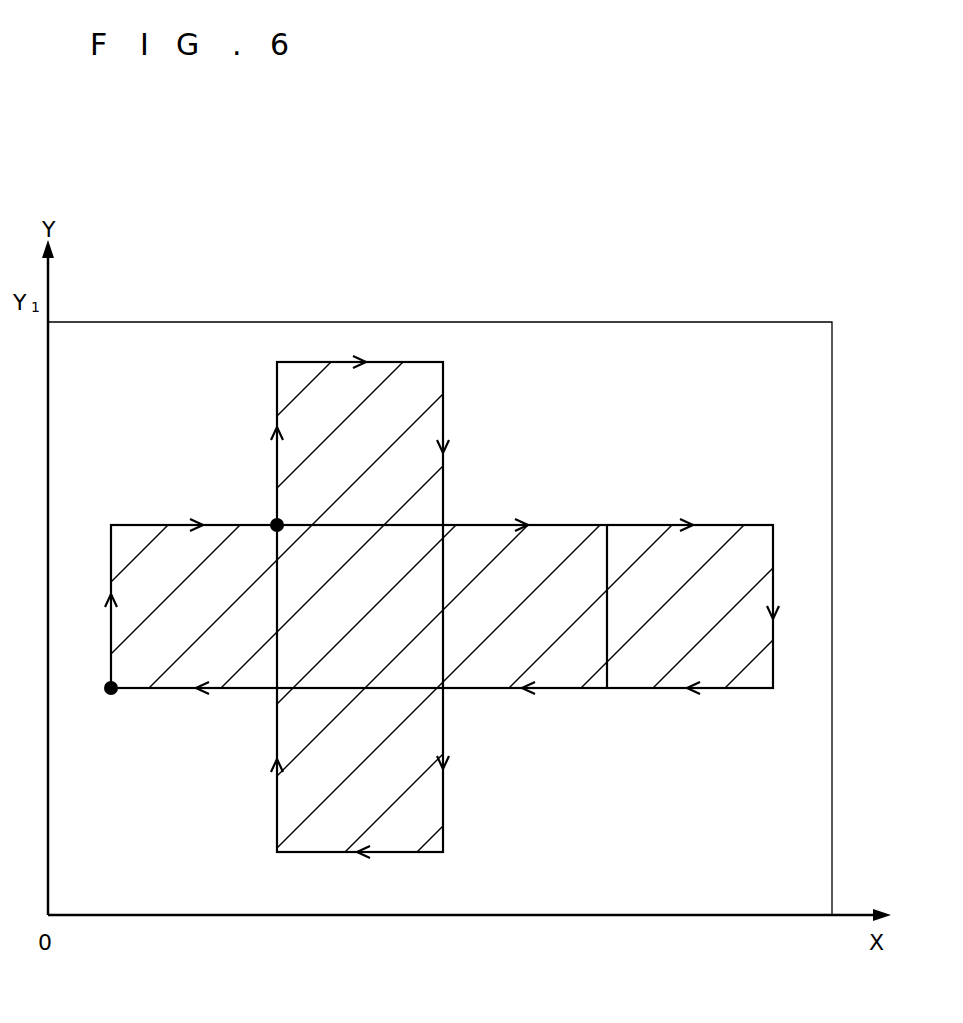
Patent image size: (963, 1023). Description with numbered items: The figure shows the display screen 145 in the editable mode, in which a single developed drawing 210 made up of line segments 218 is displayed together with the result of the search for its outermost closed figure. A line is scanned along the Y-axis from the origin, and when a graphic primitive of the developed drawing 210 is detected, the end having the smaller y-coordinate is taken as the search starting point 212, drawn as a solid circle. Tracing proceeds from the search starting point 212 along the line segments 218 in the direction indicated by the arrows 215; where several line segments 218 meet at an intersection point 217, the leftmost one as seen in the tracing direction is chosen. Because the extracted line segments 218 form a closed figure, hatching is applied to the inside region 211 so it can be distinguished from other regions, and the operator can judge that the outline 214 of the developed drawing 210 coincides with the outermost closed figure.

The display screen 145 is at (440, 322).
The developed drawing 210 is at (773, 518).
The inside region 211 is at (722, 609).
The search starting point 212 is at (110, 696).
The outline 214 is at (443, 832).
The arrows 215 is at (110, 592).
The intersection point 217 is at (272, 522).
The line segment 218 is at (277, 375).